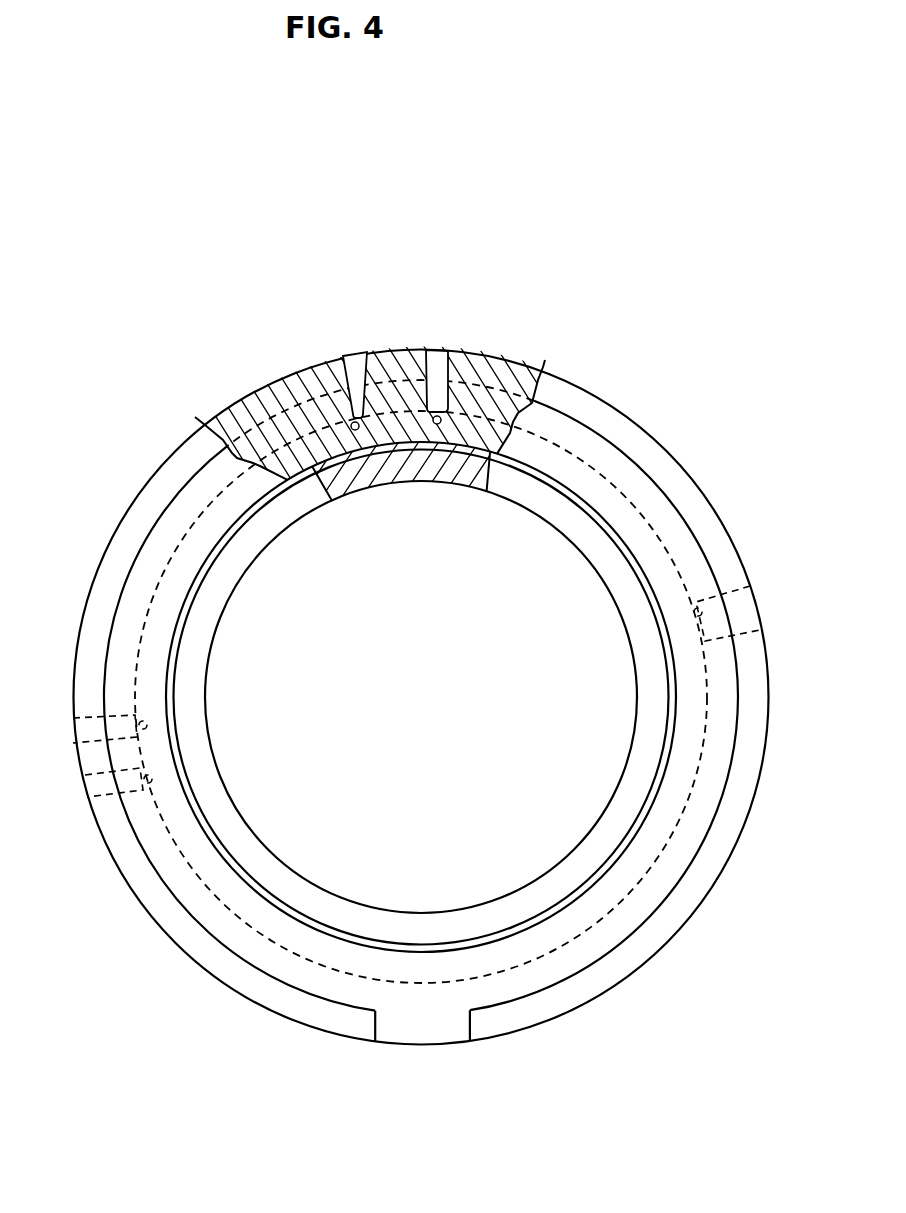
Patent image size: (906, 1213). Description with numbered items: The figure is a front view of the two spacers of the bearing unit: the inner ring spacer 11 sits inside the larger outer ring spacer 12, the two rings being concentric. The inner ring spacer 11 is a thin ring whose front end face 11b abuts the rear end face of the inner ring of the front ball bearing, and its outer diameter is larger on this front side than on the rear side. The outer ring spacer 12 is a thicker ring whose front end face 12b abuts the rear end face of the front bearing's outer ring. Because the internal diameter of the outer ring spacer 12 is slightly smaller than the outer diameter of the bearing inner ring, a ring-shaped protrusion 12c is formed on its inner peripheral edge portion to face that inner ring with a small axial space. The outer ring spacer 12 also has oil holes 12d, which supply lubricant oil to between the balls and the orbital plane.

The inner ring spacer 11 is at (572, 543).
The front end face of inner ring spacer 11b is at (605, 572).
The outer ring spacer 12 is at (605, 402).
The front end face of outer ring spacer 12b is at (679, 487).
The protrusion 12c is at (550, 441).
The oil hole 12d is at (332, 384).